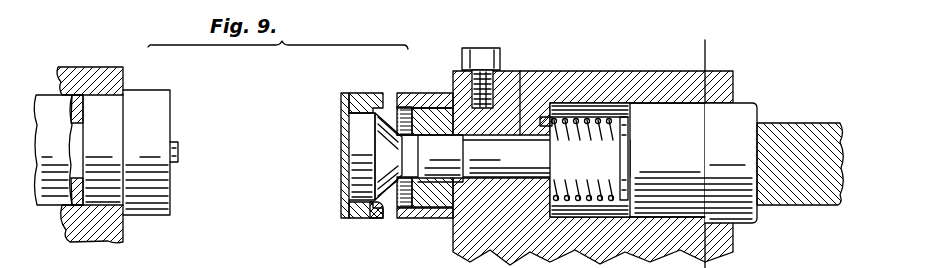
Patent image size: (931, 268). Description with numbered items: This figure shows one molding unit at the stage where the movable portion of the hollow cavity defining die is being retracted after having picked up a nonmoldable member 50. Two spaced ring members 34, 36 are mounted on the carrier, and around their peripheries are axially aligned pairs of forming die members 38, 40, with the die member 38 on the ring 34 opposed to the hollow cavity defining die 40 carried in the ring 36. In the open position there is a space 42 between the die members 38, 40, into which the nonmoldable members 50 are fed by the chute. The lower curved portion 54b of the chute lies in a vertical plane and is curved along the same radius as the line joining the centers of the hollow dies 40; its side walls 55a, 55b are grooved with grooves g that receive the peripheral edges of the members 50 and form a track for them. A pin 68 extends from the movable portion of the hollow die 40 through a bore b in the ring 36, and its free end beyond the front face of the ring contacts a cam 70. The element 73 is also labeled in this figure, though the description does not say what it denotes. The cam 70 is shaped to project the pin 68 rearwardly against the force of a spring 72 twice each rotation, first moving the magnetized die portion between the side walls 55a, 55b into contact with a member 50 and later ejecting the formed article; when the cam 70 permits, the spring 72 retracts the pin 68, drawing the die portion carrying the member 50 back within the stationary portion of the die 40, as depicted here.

The ring member 34 is at (68, 66).
The forming die member 38 is at (163, 103).
The space 42 is at (270, 101).
The nonmoldable member 50 is at (348, 157).
The side wall of the chute 55a is at (355, 95).
The side wall of the chute 55b is at (357, 220).
The grooves g is at (360, 207).
The lower curved portion of the chute 54b is at (342, 152).
The ring member 36 is at (650, 72).
The set screw 73 is at (520, 80).
The forming die member 40 is at (540, 103).
The bore b is at (605, 105).
The spring 72 is at (602, 135).
The pin 68 is at (750, 107).
The cam 70 is at (787, 205).